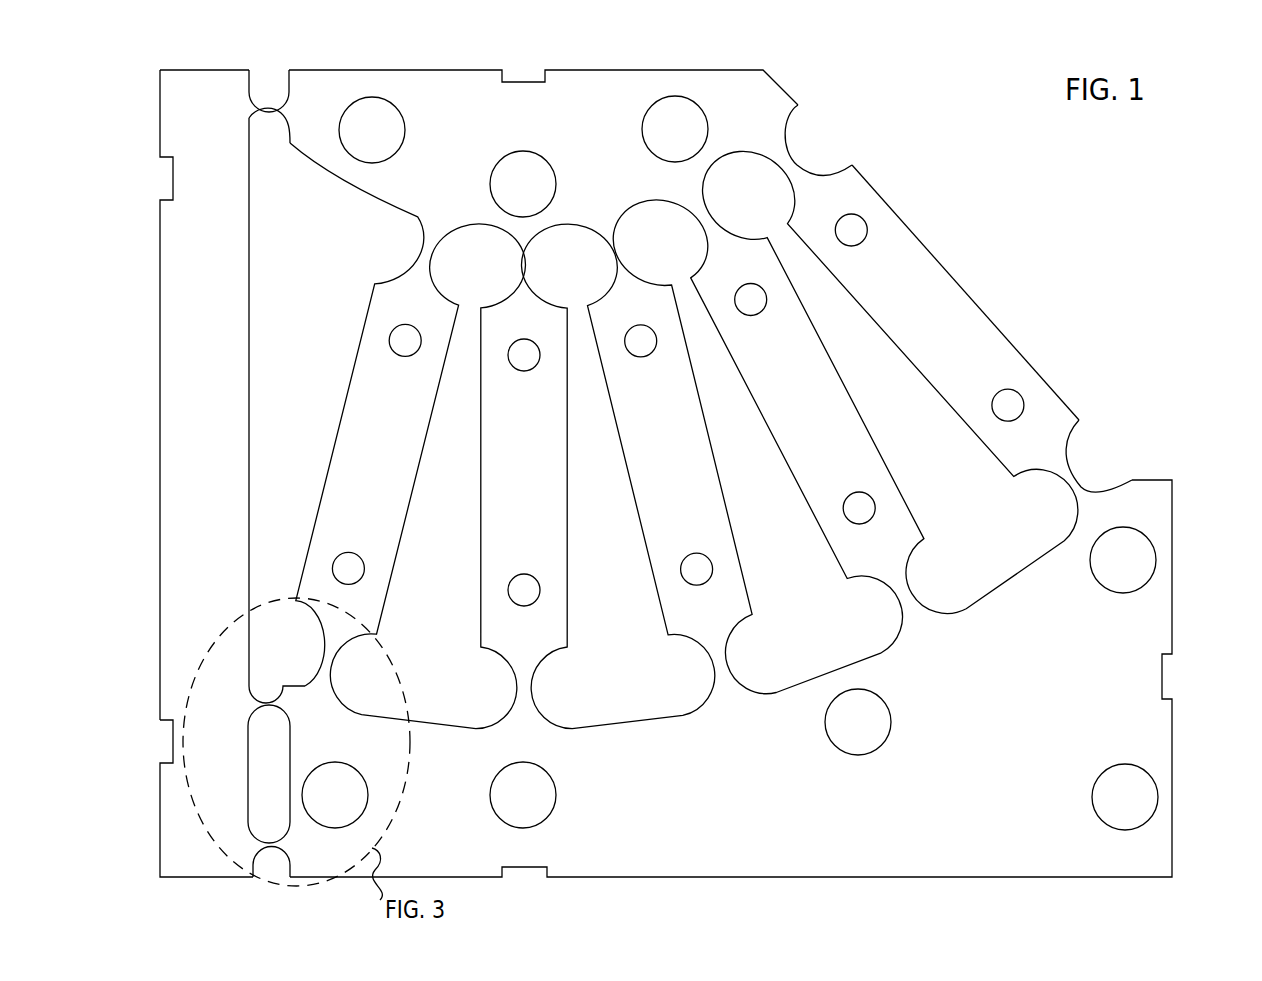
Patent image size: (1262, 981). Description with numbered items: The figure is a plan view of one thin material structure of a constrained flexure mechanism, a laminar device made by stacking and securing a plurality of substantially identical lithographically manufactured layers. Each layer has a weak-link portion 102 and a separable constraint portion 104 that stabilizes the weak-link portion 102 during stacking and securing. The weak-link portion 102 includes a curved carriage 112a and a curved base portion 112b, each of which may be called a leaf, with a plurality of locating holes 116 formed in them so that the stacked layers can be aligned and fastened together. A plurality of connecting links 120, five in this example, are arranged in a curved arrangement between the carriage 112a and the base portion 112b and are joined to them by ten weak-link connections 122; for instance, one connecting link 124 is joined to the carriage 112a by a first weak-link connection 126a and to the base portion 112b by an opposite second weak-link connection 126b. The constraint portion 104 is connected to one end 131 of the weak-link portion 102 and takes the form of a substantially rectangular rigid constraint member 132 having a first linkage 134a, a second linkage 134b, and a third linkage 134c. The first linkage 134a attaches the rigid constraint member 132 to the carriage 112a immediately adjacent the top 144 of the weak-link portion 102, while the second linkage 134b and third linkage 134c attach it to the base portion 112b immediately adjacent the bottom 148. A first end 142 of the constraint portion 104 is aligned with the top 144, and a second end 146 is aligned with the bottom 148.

The weak-link portion 102 is at (933, 138).
The separable constraint portion 104 is at (133, 116).
The carriage 112a is at (454, 95).
The base portion 112b is at (1160, 738).
The locating holes 116 is at (370, 97).
The connecting links 120 is at (1027, 312).
The weak-link connections 122 is at (875, 117).
The connecting link 124 is at (1032, 384).
The first weak-link connection 126a is at (793, 160).
The second weak-link connection 126b is at (1082, 488).
The end 131 is at (288, 89).
The rigid constraint member 132 is at (170, 260).
The first linkage 134a is at (258, 110).
The second linkage 134b is at (260, 703).
The third linkage 134c is at (257, 855).
The first end 142 is at (173, 70).
The top 144 is at (298, 70).
The second end 146 is at (172, 878).
The bottom 148 is at (290, 877).